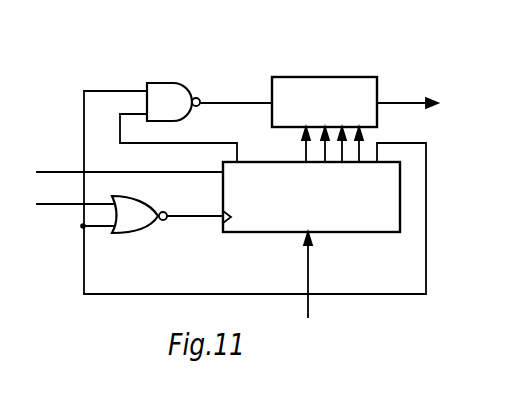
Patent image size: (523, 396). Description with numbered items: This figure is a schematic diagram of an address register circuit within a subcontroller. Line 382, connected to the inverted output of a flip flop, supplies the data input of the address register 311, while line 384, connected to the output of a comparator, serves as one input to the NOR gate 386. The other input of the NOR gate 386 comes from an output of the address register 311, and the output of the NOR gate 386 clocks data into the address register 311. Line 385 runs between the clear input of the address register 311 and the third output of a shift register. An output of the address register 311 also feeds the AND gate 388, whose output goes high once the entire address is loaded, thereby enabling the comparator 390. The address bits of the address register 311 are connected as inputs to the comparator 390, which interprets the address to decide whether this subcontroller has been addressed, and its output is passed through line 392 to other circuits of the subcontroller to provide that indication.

The address register 311 is at (262, 233).
The line 382 is at (60, 172).
The line 384 is at (66, 205).
The line 385 is at (310, 270).
The NOR gate 386 is at (114, 234).
The AND gate 388 is at (167, 82).
The comparator 390 is at (318, 77).
The line 392 is at (403, 103).